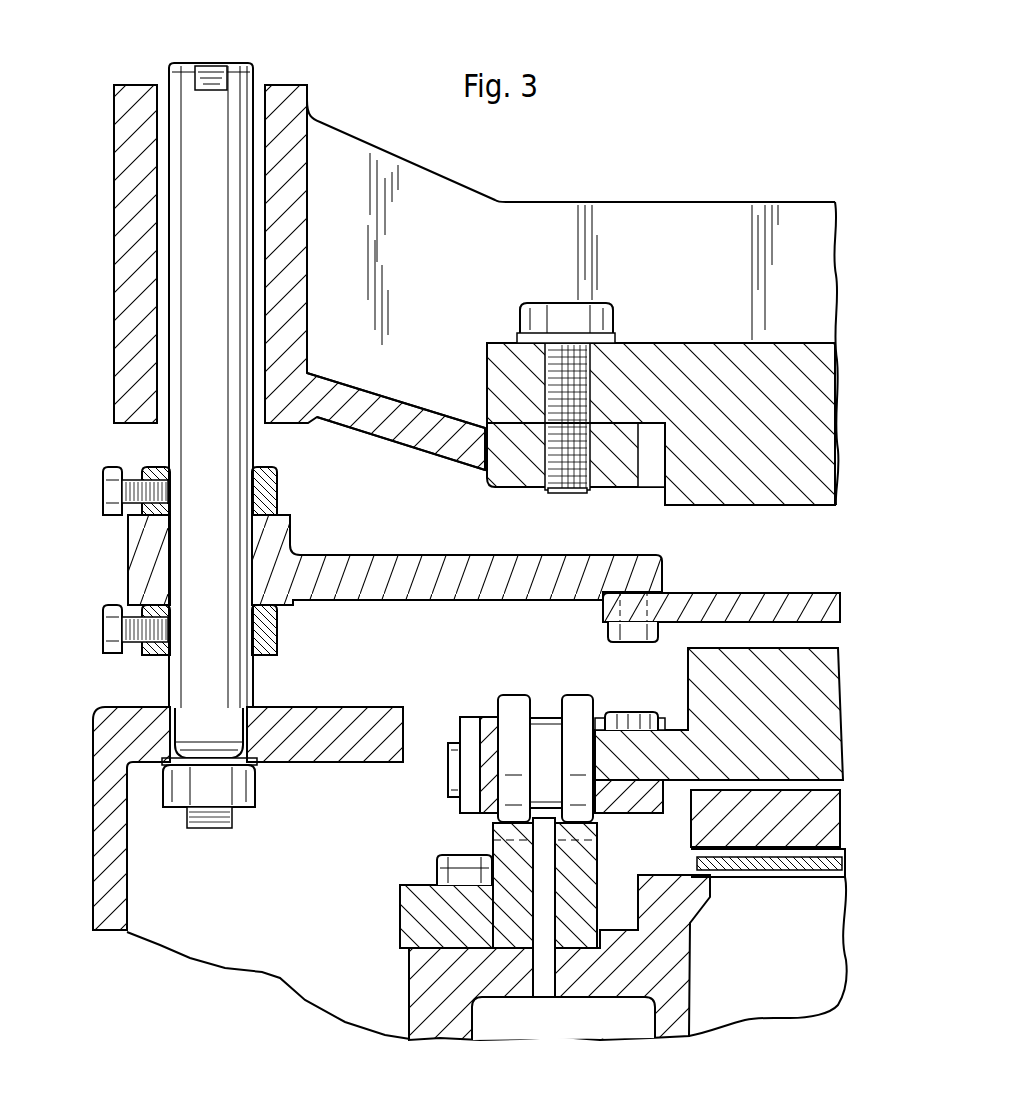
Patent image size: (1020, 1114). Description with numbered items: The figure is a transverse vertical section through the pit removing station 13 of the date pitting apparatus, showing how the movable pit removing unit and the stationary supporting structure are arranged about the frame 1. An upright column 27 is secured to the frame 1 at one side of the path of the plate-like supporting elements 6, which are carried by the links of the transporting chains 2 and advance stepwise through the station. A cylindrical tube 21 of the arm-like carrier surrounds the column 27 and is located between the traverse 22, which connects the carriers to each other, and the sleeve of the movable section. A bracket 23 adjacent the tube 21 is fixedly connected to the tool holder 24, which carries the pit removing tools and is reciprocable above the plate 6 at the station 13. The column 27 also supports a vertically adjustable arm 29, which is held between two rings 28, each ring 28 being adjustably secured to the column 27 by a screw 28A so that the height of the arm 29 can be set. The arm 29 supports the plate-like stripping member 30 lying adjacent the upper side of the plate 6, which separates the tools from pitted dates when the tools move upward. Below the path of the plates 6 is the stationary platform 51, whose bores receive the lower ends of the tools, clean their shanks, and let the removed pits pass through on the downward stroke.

The frame 1 is at (108, 852).
The transporting chain 2 is at (485, 725).
The supporting element 6 is at (700, 700).
The pit removing station 13 is at (596, 198).
The cylindrical tube 21 is at (305, 97).
The traverse 22 is at (698, 220).
The bracket 23 is at (383, 420).
The tool holder 24 is at (717, 470).
The column 27 is at (233, 77).
The ring 28 is at (265, 492).
The screw 28A is at (106, 507).
The arm 29 is at (415, 577).
The stripping member 30 is at (747, 607).
The platform 51 is at (712, 825).